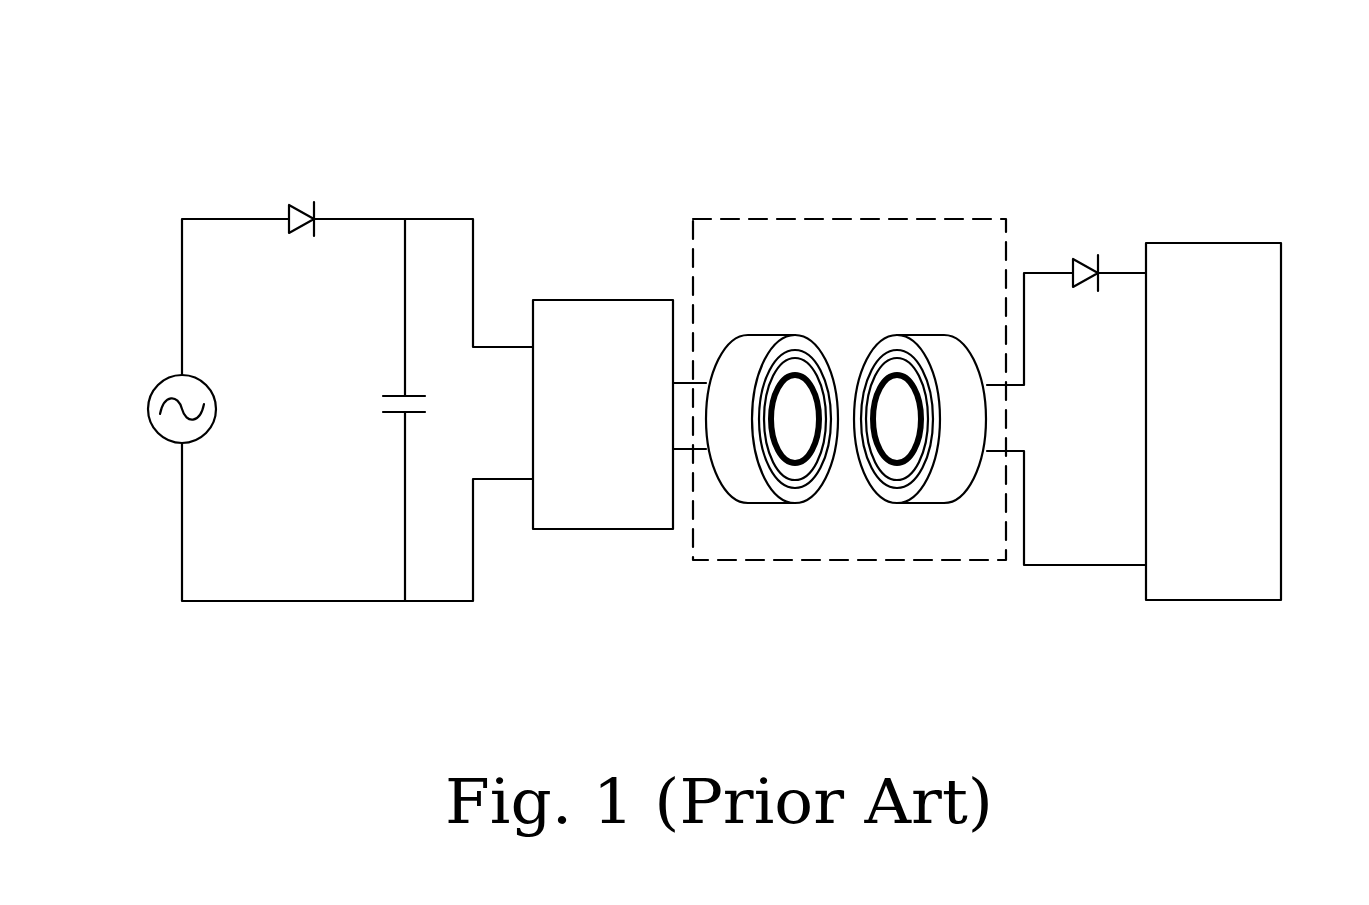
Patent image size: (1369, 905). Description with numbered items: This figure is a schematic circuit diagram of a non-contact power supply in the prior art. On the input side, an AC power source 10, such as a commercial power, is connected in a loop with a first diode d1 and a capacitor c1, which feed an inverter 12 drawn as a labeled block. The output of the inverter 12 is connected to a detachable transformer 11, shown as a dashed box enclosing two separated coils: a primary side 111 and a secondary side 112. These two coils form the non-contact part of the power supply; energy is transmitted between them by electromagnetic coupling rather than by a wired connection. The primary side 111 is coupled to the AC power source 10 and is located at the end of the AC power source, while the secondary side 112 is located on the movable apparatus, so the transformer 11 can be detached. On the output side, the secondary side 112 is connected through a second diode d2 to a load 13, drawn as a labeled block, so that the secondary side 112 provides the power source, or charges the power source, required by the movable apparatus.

The AC power source 10 is at (157, 390).
The first diode d1 is at (302, 194).
The capacitor c1 is at (390, 382).
The inverter 12 is at (610, 300).
The detachable transformer 11 is at (848, 219).
The primary side 111 is at (765, 335).
The secondary side 112 is at (922, 335).
The second diode d2 is at (1084, 249).
The load 13 is at (1183, 243).